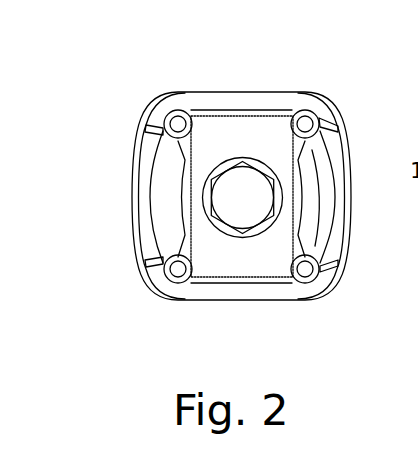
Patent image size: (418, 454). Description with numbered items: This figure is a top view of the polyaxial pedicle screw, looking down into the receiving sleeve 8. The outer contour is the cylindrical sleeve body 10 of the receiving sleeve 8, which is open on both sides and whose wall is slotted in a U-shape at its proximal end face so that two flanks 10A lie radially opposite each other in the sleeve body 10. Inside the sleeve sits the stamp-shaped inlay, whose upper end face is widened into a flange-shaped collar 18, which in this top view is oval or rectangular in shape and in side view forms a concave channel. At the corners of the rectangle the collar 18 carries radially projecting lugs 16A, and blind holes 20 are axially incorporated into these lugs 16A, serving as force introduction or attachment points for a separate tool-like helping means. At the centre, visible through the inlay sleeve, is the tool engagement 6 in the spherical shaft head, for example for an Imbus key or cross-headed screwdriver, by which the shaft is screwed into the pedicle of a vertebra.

The flanks 10A is at (125, 178).
The sleeve body 10 is at (348, 249).
The receiving sleeve 8 is at (300, 293).
The flange-shaped collar 18 is at (222, 123).
The radially projecting lugs 16A is at (168, 119).
The blind holes 20 is at (313, 112).
The tool engagement 6 is at (220, 206).